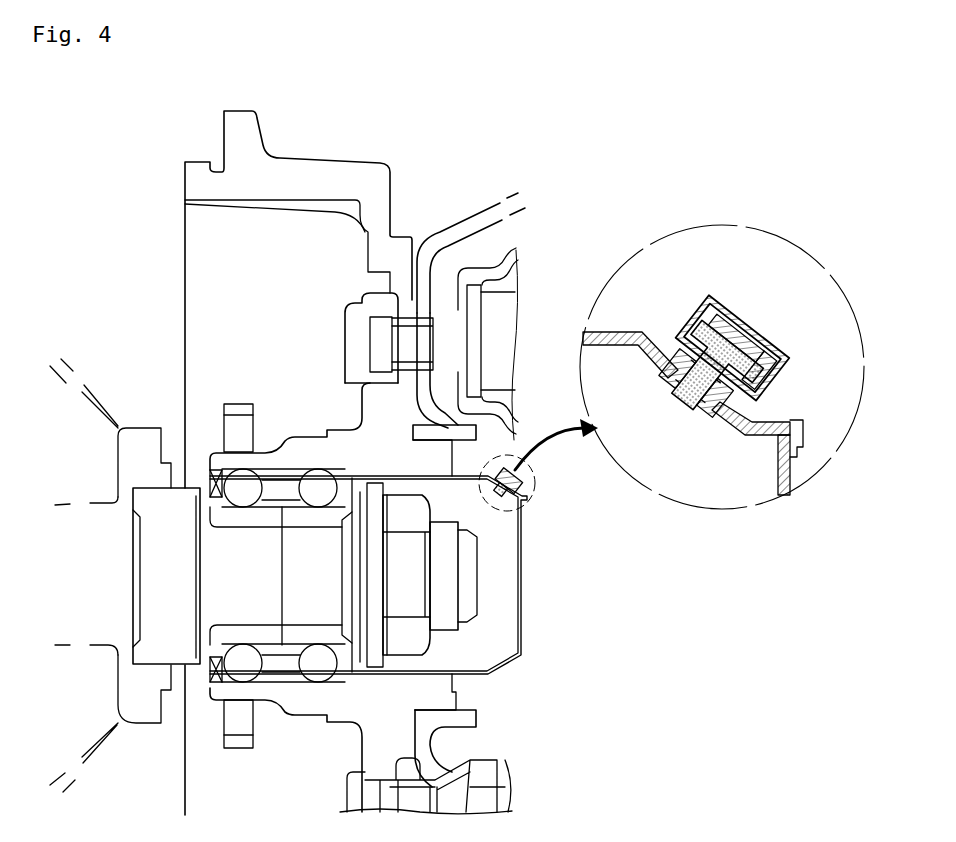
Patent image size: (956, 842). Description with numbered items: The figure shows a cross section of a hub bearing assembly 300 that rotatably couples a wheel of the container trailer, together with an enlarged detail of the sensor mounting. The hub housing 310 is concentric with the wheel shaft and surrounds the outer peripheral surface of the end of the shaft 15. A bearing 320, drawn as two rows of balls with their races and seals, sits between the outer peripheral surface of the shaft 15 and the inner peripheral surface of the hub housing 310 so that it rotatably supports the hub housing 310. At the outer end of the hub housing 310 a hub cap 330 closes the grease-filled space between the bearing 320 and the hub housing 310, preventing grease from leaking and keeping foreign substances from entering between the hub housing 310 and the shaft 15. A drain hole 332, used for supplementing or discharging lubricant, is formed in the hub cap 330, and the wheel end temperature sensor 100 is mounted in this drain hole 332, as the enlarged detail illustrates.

The shaft 15 is at (155, 650).
The wheel end temperature sensor 100 is at (732, 288).
The hub bearing assembly 300 is at (545, 641).
The hub housing 310 is at (300, 705).
The bearing 320 is at (232, 668).
The hub cap 330 is at (522, 578).
The drain hole 332 is at (522, 510).